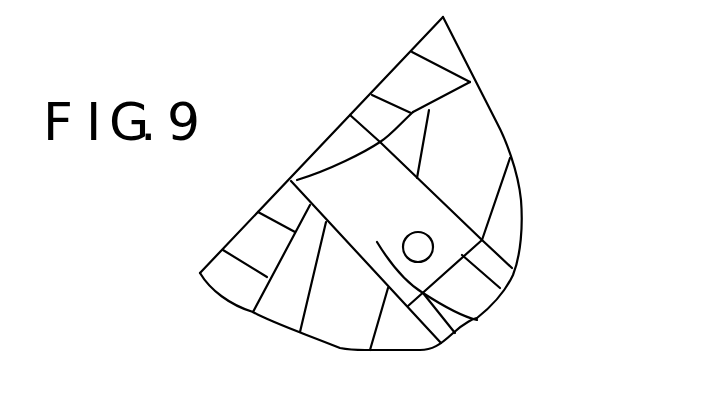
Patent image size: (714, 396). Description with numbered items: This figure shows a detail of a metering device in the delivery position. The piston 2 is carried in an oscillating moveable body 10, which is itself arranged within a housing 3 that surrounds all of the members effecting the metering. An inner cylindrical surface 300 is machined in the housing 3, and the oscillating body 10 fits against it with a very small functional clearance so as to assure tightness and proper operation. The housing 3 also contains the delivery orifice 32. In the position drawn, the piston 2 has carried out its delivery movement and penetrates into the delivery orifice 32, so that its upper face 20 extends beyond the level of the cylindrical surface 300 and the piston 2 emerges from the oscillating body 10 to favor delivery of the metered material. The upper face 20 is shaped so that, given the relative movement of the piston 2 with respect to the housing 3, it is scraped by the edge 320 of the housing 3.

The piston 2 is at (477, 320).
The housing 3 is at (230, 283).
The oscillating moveable body 10 is at (514, 203).
The upper face of the piston 20 is at (294, 169).
The delivery orifice 32 is at (330, 150).
The inner cylindrical surface 300 is at (440, 116).
The edge of the housing 320 is at (377, 148).